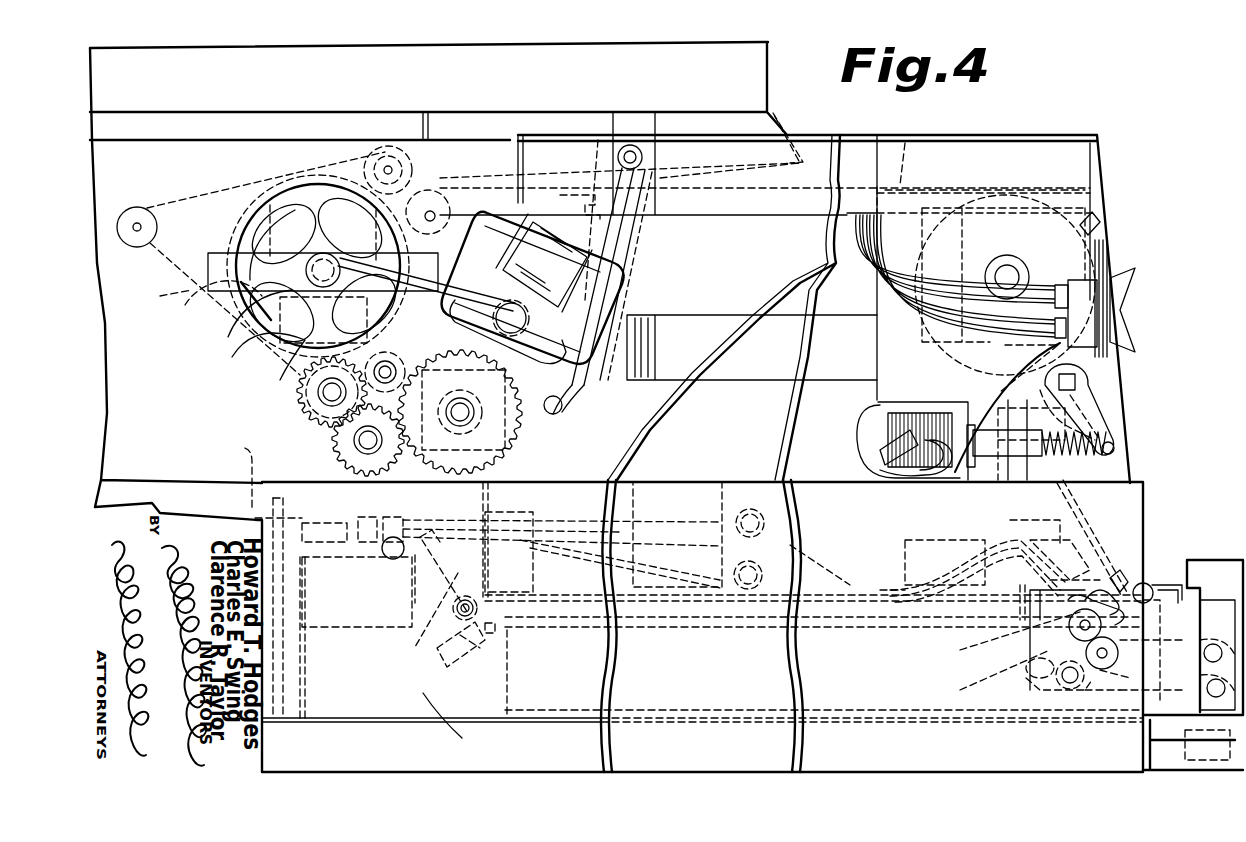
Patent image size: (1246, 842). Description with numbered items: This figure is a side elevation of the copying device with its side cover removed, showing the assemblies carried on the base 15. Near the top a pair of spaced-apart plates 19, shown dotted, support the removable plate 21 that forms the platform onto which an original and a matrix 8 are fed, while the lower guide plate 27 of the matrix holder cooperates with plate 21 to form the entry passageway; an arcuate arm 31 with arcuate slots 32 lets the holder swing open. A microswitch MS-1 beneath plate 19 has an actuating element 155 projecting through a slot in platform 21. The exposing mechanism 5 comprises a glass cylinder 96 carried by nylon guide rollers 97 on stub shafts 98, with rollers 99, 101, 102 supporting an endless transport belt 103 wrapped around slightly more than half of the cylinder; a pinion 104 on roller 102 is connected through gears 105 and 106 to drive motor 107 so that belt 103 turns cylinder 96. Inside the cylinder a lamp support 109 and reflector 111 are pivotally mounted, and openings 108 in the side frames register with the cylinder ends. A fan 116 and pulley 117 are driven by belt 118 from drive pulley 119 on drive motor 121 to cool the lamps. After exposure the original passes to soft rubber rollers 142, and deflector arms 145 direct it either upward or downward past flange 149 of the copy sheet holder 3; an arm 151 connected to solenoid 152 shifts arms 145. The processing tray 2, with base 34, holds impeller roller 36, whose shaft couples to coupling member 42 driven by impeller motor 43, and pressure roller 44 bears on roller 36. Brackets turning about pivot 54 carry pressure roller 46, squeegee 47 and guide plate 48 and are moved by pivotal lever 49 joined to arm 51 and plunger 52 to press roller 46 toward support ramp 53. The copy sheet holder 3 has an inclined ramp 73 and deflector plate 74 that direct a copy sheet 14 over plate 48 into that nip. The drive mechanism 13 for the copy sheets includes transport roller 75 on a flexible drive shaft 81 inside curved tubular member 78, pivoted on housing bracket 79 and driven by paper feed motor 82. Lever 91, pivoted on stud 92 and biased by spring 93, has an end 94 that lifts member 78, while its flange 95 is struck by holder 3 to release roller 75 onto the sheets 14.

The processing tray 2 is at (1230, 575).
The copy sheet holder 3 is at (850, 585).
The exposing mechanism 5 is at (212, 266).
The matrix 8 is at (965, 690).
The drive mechanism 13 is at (338, 553).
The copy sheet 14 is at (1000, 545).
The base 15 is at (334, 720).
The spaced-apart plates 19 is at (598, 150).
The removable plate 21 is at (800, 163).
The lower guide plate 27 is at (690, 178).
The arcuate arm 31 is at (632, 232).
The arcuate slots 32 is at (618, 257).
The base 34 is at (668, 718).
The impeller roller 36 is at (1100, 670).
The coupling member 42 is at (490, 636).
The impeller motor 43 is at (457, 721).
The pressure roller 44 is at (1062, 628).
The pressure roller 46 is at (1146, 583).
The squeegee 47 is at (1121, 572).
The guide plate 48 is at (1078, 560).
The pivotal lever 49 is at (1158, 695).
The arm 51 is at (1038, 690).
The plunger 52 is at (1214, 635).
The support ramp 53 is at (1170, 580).
The pivot 54 is at (1068, 690).
The inclined ramp 73 is at (990, 565).
The deflector plate 74 is at (1046, 530).
The transport roller 75 is at (752, 510).
The curved tubular member 78 is at (583, 525).
The housing bracket 79 is at (370, 522).
The flexible drive shaft 81 is at (310, 522).
The paper feed motor 82 is at (245, 448).
The lever 91 is at (430, 612).
The stud 92 is at (436, 652).
The spring 93 is at (480, 608).
The end of lever 94 is at (420, 572).
The flange 95 is at (493, 580).
The glass cylinder 96 is at (232, 233).
The nylon guide rollers 97 is at (436, 220).
The stub shafts 98 is at (425, 234).
The roller 99 is at (135, 240).
The roller 101 is at (406, 160).
The roller 102 is at (300, 398).
The endless transport belt 103 is at (196, 303).
The pinion 104 is at (312, 418).
The gear 105 is at (334, 450).
The gear 106 is at (440, 468).
The drive motor 107 is at (500, 458).
The openings 108 is at (275, 200).
The lamp support 109 is at (300, 378).
The reflector 111 is at (255, 318).
The fan 116 is at (262, 248).
The pulley 117 is at (246, 338).
The belt 118 is at (472, 305).
The drive pulley 119 is at (520, 330).
The drive motor 121 is at (575, 297).
The soft rubber rollers 142 is at (1108, 262).
The deflector arms 145 is at (1005, 395).
The flange 149 is at (1078, 505).
The arm 151 is at (1110, 425).
The solenoid 152 is at (958, 475).
The actuating element 155 is at (578, 195).
The microswitch MS-1 is at (549, 263).